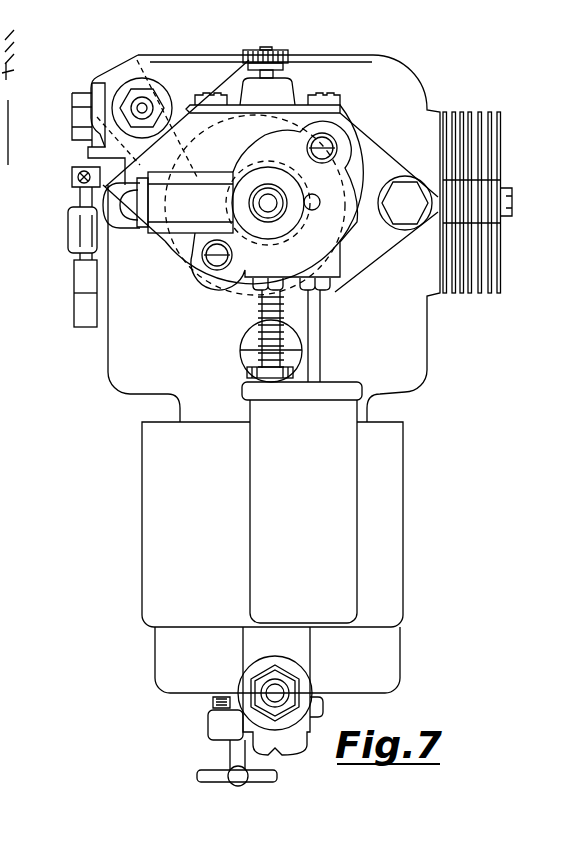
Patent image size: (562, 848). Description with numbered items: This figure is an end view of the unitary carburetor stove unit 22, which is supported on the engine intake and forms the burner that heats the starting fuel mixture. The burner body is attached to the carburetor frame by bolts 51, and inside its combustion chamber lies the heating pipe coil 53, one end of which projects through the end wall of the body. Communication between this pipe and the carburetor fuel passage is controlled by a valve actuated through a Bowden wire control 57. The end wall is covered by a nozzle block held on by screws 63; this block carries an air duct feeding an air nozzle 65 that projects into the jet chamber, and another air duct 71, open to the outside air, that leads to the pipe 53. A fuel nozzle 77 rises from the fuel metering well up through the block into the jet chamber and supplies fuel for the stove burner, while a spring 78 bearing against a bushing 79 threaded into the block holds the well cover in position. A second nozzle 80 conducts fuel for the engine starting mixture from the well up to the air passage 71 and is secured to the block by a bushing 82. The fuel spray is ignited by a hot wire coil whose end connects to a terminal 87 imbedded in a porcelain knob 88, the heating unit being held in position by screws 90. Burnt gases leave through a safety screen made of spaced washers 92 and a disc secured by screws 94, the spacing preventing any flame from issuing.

The carburetor stove unit 22 is at (305, 513).
The bolts 51 is at (118, 207).
The heating pipe coil 53 is at (162, 173).
The Bowden wire control 57 is at (144, 106).
The screws 63 is at (326, 142).
The air nozzle 65 is at (266, 204).
The air duct 71 is at (308, 205).
The nozzle 77 is at (248, 371).
The spring 78 is at (257, 341).
The bushing 79 is at (254, 285).
The nozzle 80 is at (323, 333).
The bushing 82 is at (343, 287).
The terminal 87 is at (280, 51).
The porcelain knob 88 is at (284, 97).
The screws 90 is at (208, 88).
The washers 92 is at (470, 113).
The screws 94 is at (508, 189).